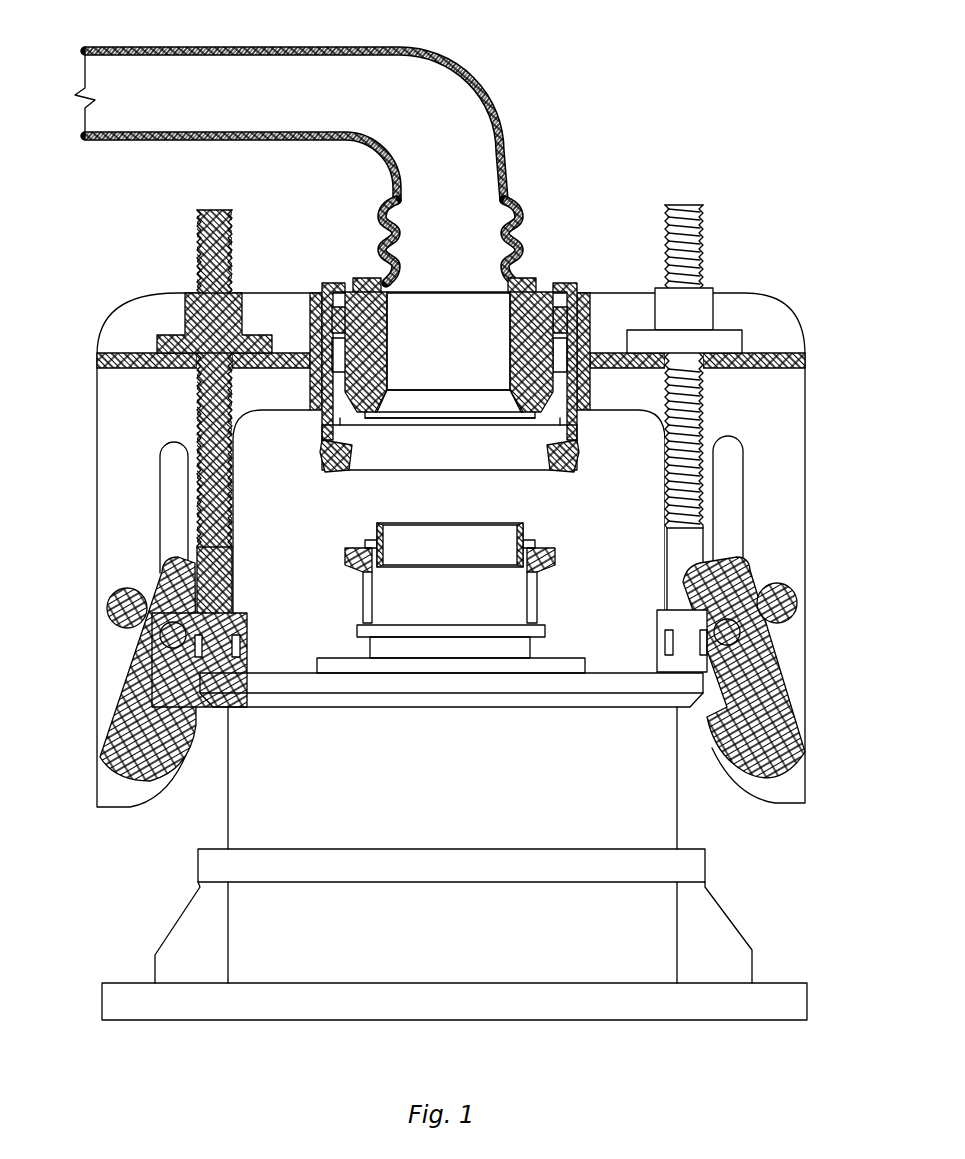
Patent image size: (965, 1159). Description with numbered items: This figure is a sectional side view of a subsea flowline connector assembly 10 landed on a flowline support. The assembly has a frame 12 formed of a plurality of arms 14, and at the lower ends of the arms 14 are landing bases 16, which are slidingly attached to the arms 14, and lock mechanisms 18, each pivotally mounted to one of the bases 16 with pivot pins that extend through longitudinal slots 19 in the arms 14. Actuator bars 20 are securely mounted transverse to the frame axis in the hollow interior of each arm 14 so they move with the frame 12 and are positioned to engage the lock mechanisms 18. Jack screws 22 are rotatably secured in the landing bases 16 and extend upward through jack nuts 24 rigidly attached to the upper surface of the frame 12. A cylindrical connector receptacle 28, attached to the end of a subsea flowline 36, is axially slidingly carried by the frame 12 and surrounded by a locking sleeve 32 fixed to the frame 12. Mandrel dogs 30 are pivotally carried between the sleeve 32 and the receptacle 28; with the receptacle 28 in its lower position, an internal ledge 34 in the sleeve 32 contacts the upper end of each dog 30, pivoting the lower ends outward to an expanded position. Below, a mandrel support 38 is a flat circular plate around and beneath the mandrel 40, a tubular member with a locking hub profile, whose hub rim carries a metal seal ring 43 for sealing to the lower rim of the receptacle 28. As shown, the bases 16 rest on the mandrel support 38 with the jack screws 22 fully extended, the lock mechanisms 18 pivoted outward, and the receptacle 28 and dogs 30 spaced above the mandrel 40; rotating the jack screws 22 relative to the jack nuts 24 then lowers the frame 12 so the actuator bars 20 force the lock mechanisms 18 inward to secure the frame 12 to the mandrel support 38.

The subsea flowline connector assembly 10 is at (748, 168).
The frame 12 is at (318, 292).
The arms 14 is at (793, 478).
The landing bases 16 is at (148, 672).
The lock mechanisms 18 is at (107, 730).
The longitudinal slots 19 is at (743, 468).
The actuator bars 20 is at (107, 608).
The jack screws 22 is at (197, 420).
The jack nuts 24 is at (700, 310).
The connector receptacle 28 is at (380, 330).
The mandrel dogs 30 is at (322, 455).
The locking sleeve 32 is at (327, 283).
The internal ledge 34 is at (325, 405).
The subsea flowline 36 is at (293, 46).
The mandrel support 38 is at (383, 700).
The mandrel 40 is at (343, 574).
The metal seal ring 43 is at (523, 530).